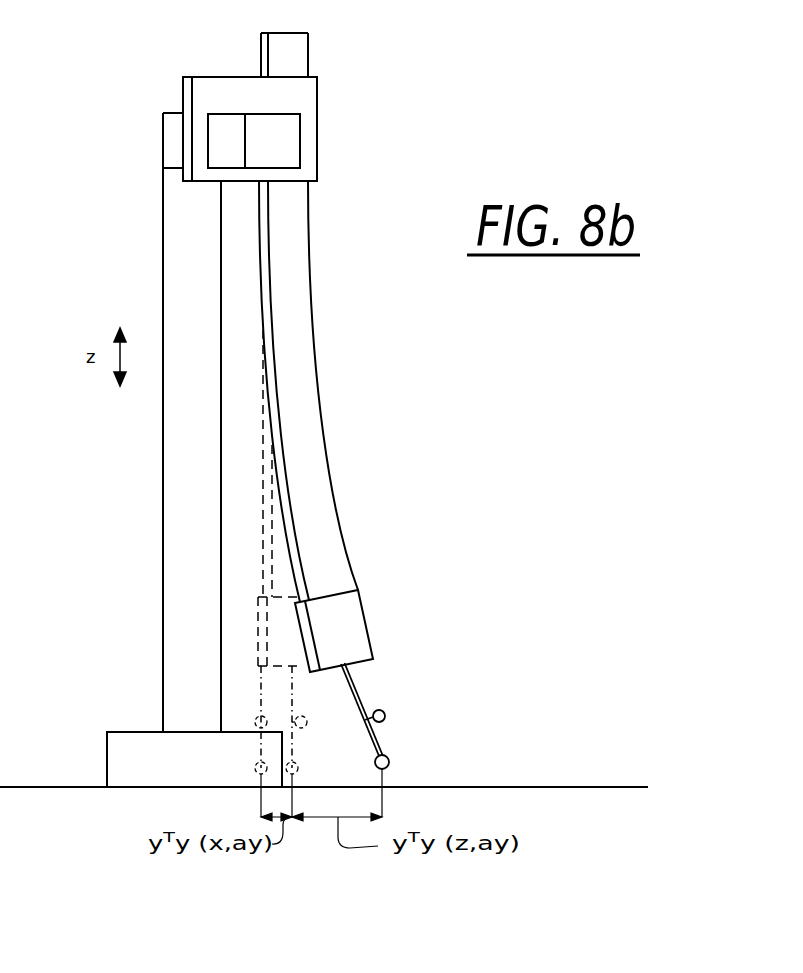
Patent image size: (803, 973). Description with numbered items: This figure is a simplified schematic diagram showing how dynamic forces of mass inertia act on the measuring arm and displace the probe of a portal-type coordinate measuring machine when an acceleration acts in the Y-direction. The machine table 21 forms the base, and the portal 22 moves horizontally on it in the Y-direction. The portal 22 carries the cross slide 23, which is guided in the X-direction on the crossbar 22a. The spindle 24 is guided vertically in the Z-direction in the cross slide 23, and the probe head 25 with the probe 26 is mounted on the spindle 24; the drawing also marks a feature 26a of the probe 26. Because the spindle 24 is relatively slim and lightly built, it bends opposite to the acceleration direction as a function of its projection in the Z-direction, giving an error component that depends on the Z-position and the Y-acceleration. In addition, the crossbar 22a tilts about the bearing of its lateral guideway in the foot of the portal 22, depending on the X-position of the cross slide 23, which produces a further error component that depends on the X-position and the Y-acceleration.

The machine table 21 is at (564, 787).
The portal 22 is at (171, 519).
The crossbar 22a is at (281, 136).
The cross slide 23 is at (219, 88).
The spindle 24 is at (296, 306).
The probe head 25 is at (355, 622).
The probe 26 is at (352, 688).
The stylus ball 26a is at (383, 738).